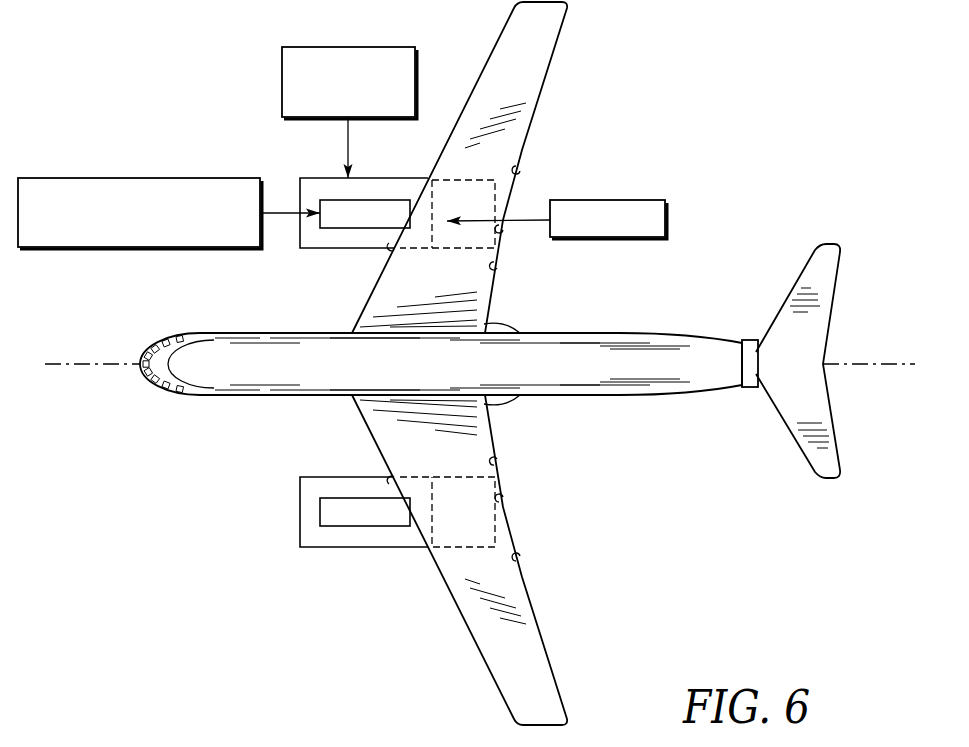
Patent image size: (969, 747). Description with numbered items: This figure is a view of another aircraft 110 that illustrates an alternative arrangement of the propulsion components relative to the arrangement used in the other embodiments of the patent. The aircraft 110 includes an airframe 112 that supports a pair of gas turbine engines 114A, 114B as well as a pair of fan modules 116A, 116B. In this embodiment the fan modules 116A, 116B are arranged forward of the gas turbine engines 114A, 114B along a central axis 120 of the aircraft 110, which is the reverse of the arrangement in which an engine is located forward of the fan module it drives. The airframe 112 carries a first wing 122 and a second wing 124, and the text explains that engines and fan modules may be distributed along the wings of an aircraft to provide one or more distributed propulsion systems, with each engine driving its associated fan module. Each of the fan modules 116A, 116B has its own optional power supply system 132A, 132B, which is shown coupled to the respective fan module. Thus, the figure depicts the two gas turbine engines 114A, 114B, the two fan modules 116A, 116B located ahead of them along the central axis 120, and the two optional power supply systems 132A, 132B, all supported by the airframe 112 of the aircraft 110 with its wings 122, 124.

The aircraft 110 is at (703, 77).
The airframe 112 is at (263, 368).
The gas turbine engine 114A is at (668, 220).
The gas turbine engine 114B is at (468, 523).
The fan module 116A is at (282, 80).
The fan module 116B is at (338, 548).
The central axis 120 is at (93, 363).
The wing 122 is at (512, 70).
The wing 124 is at (520, 672).
The optional power supply system 132A is at (139, 178).
The optional power supply system 132B is at (320, 512).